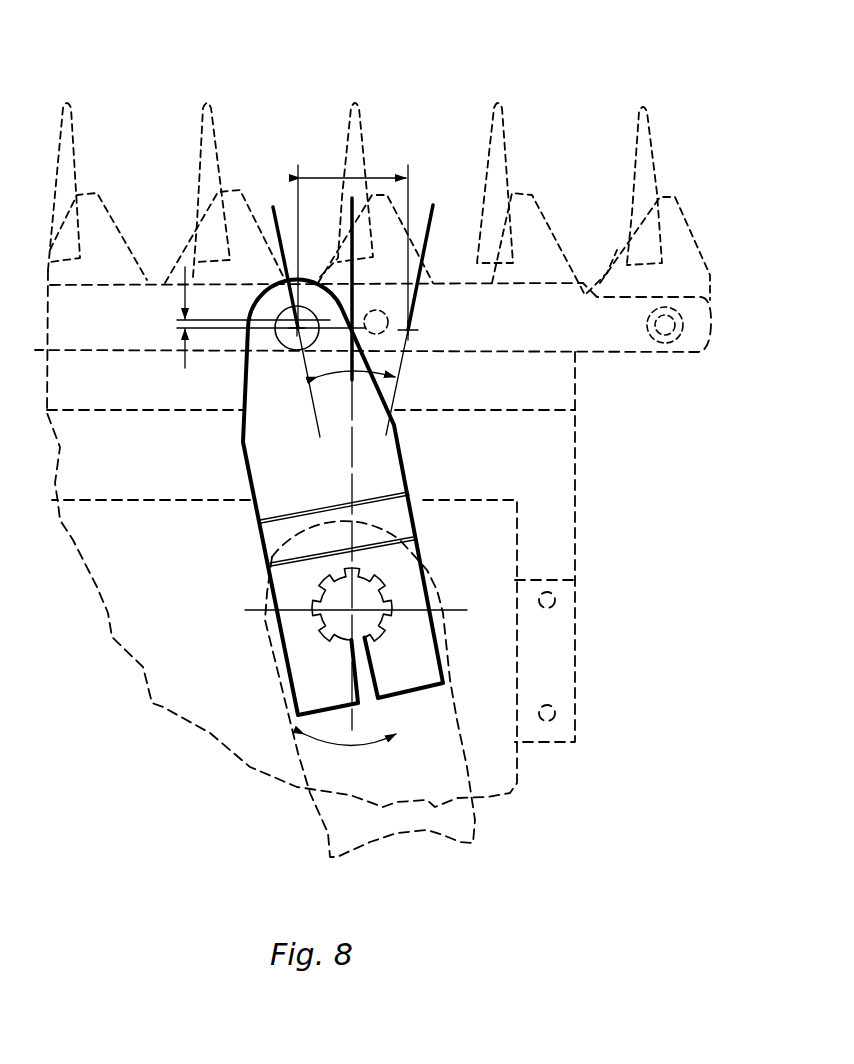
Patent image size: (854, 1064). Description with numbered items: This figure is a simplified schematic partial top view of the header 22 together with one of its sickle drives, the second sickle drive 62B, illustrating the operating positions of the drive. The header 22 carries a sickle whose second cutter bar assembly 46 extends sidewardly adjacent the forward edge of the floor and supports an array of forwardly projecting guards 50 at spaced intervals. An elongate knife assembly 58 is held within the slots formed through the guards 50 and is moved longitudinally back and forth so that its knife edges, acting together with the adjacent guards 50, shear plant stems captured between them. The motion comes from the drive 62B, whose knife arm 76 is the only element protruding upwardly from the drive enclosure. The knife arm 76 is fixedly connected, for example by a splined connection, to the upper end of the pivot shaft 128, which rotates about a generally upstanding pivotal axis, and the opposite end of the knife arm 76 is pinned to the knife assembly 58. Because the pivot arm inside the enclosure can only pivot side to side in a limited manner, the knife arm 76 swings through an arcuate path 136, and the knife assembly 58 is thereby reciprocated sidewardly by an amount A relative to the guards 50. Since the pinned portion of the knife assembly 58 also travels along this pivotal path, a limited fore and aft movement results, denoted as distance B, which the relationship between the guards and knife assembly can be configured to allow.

The header 22 is at (562, 78).
The guards 50 is at (212, 103).
The knife assembly 58 is at (97, 195).
The second cutter bar assembly 46 is at (693, 327).
The amount A is at (380, 176).
The distance B is at (185, 365).
The second sickle drive 62B is at (285, 663).
The pivot shaft 128 is at (380, 588).
The knife arm 76 is at (262, 518).
The arcuate path 136 is at (365, 745).